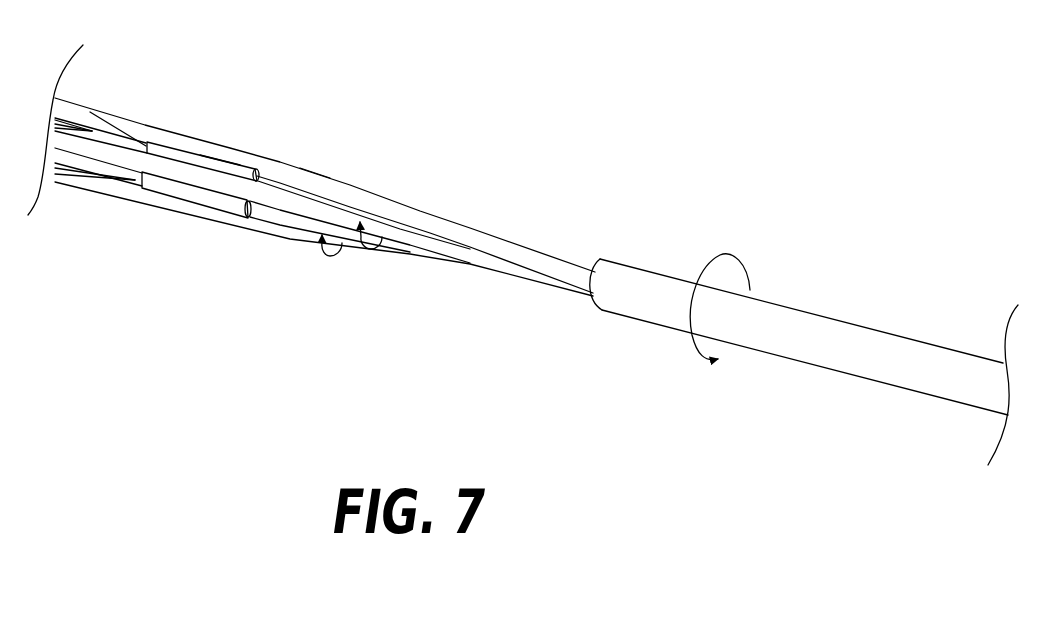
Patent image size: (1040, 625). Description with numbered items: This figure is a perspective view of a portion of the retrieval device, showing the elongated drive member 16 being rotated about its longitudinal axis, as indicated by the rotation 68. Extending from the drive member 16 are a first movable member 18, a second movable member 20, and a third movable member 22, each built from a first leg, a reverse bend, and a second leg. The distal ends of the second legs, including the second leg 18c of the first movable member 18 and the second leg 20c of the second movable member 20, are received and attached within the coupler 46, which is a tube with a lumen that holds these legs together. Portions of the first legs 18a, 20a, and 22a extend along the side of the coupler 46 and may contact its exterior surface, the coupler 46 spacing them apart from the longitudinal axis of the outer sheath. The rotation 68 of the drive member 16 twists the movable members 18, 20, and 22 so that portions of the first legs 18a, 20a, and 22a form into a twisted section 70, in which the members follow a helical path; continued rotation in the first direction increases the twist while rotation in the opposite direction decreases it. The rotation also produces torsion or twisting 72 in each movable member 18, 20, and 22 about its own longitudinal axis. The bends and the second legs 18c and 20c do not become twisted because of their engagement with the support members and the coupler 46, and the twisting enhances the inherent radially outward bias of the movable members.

The drive member 16 is at (876, 327).
The first movable member 18 is at (350, 183).
The first leg 18a is at (170, 138).
The second leg 18c is at (70, 110).
The second movable member 20 is at (492, 278).
The first leg 20a is at (302, 216).
The second leg 20c is at (69, 162).
The third movable member 22 is at (374, 258).
The first leg 22a is at (193, 221).
The coupler 46 is at (221, 157).
The rotation 68 is at (732, 258).
The twisted section 70 is at (421, 209).
The torsion or twisting 72 is at (310, 166).